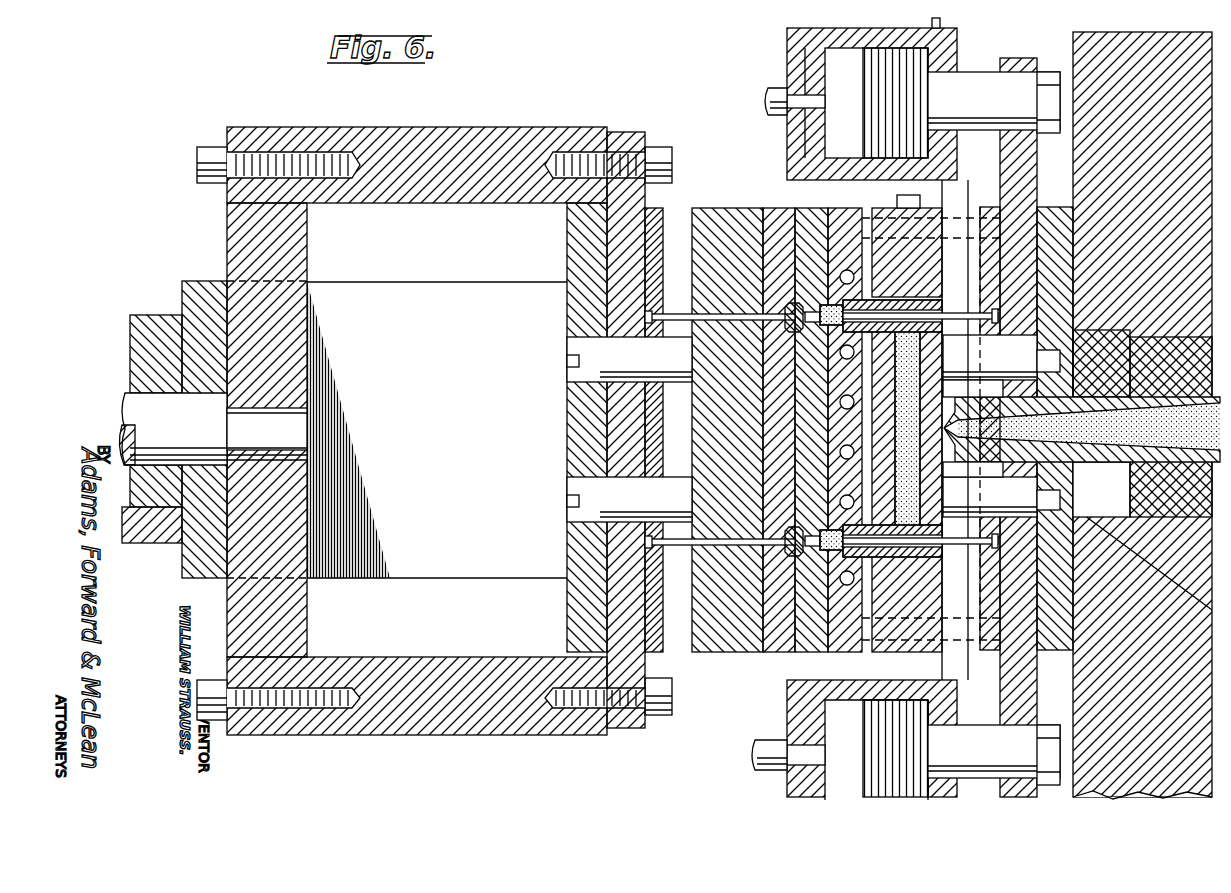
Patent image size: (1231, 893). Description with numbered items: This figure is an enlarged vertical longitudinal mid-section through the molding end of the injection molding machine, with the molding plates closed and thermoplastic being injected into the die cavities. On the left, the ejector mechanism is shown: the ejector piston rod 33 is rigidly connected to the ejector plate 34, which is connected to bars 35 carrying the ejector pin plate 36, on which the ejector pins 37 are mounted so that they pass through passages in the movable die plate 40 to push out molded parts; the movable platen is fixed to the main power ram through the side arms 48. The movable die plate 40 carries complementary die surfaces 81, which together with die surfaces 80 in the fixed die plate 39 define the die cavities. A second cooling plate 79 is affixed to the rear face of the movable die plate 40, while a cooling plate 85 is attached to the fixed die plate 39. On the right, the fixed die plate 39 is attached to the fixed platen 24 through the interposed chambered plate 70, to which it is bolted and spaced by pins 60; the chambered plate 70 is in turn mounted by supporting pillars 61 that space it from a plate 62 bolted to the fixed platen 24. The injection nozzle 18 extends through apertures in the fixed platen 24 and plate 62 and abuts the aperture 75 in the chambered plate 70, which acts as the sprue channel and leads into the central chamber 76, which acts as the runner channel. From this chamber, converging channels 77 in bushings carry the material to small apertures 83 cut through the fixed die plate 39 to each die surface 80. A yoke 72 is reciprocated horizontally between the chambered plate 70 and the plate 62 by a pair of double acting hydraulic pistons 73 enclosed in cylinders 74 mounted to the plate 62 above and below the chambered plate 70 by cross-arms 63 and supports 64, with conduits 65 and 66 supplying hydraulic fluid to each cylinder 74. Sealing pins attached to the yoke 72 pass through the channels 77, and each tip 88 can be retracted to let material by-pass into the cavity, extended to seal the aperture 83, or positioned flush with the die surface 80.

The injection nozzle 18 is at (1106, 471).
The fixed platen 24 is at (1090, 704).
The ejector piston rod 33 is at (132, 426).
The ejector plate 34 is at (240, 222).
The bars 35 is at (548, 127).
The ejector pin plate 36 is at (658, 186).
The ejector pins 37 is at (674, 544).
The fixed die plate 39 is at (806, 652).
The movable die plate 40 is at (766, 652).
The side arms 48 is at (408, 280).
The pins 60 is at (884, 274).
The supporting pillars 61 is at (1070, 312).
The plate 62 is at (1082, 620).
The cross-arms 63 is at (976, 50).
The supports 64 is at (965, 202).
The conduit 65 is at (766, 86).
The conduit 66 is at (942, 26).
The chambered plate 70 is at (900, 654).
The yoke 72 is at (1038, 186).
The double acting hydraulic pistons 73 is at (854, 134).
The cylinders 74 is at (770, 718).
The aperture 75 is at (948, 464).
The central chamber 76 is at (950, 360).
The converging channels 77 is at (858, 452).
The second cooling plate 79 is at (720, 652).
The die surfaces 80 is at (828, 524).
The complementary die surfaces 81 is at (780, 524).
The aperture 83 is at (800, 338).
The cooling plate 85 is at (858, 652).
The tip 88 is at (826, 300).